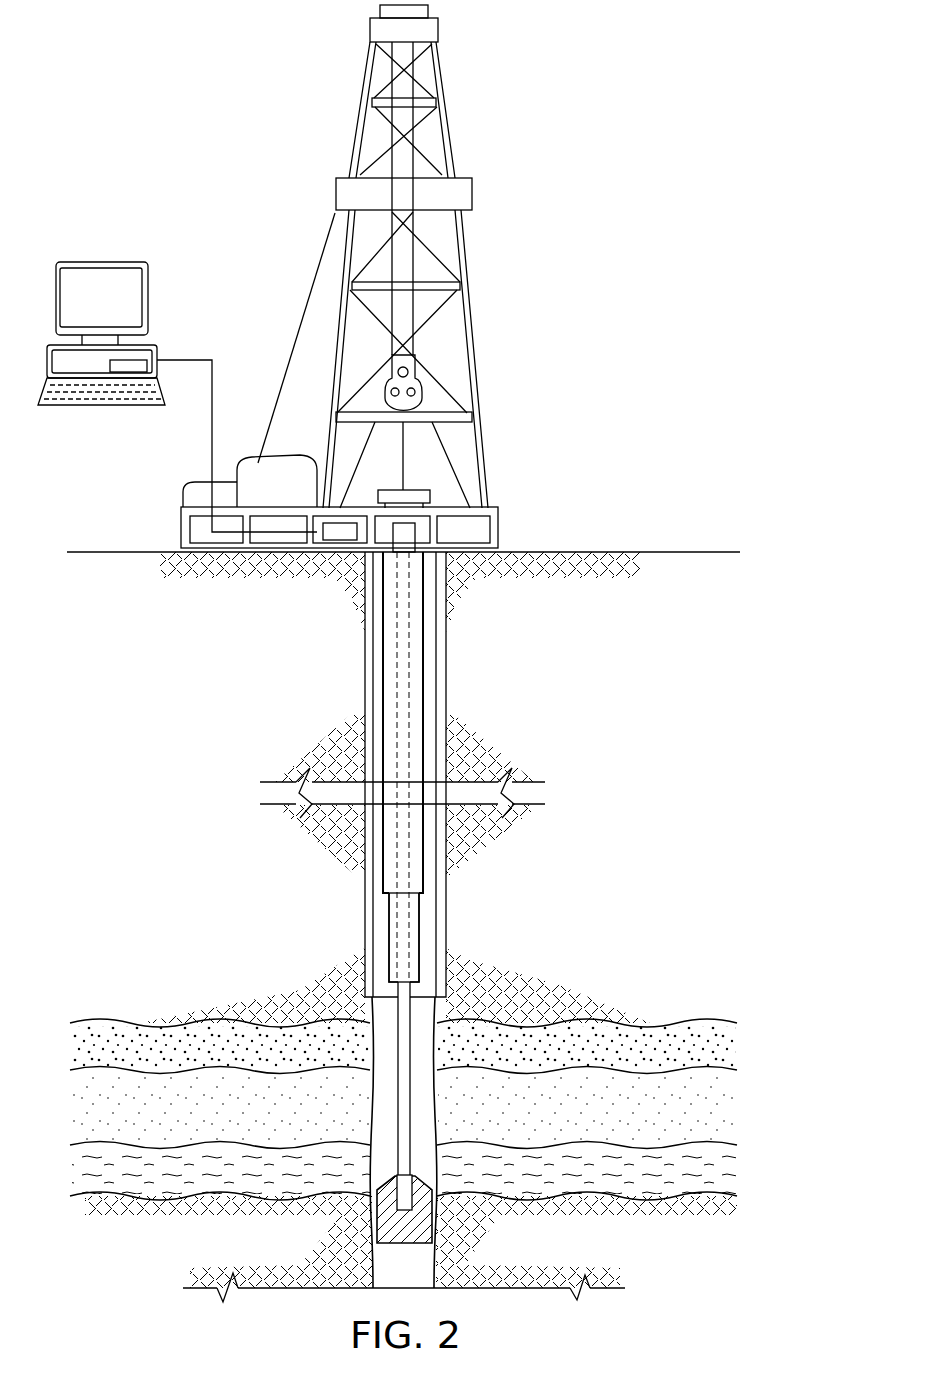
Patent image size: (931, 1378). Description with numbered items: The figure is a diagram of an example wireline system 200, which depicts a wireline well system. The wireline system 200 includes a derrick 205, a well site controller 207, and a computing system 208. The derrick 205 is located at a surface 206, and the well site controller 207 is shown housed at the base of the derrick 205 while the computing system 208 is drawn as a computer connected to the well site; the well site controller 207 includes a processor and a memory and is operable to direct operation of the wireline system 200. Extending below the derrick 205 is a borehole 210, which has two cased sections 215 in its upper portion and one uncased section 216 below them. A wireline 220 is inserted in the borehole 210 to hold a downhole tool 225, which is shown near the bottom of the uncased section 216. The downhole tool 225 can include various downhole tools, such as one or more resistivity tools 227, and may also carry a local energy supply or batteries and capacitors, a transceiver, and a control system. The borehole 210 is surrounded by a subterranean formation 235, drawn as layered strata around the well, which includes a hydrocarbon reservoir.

The wireline system 200 is at (240, 124).
The derrick 205 is at (477, 357).
The surface 206 is at (533, 549).
The well site controller 207 is at (340, 540).
The computing system 208 is at (101, 262).
The borehole 210 is at (440, 668).
The cased section 215 is at (423, 845).
The uncased section 216 is at (438, 1098).
The wireline 220 is at (420, 915).
The downhole tool 225 is at (372, 1225).
The resistivity tool 227 is at (375, 1178).
The subterranean formation 235 is at (756, 1124).